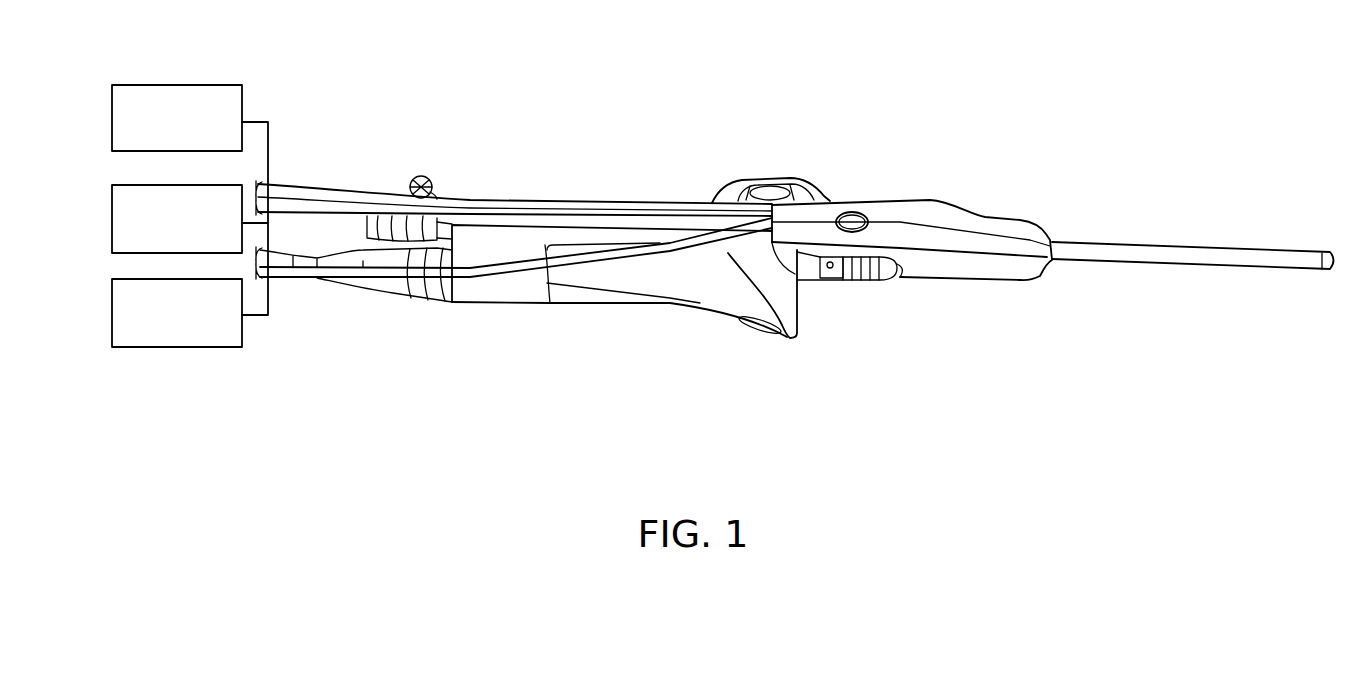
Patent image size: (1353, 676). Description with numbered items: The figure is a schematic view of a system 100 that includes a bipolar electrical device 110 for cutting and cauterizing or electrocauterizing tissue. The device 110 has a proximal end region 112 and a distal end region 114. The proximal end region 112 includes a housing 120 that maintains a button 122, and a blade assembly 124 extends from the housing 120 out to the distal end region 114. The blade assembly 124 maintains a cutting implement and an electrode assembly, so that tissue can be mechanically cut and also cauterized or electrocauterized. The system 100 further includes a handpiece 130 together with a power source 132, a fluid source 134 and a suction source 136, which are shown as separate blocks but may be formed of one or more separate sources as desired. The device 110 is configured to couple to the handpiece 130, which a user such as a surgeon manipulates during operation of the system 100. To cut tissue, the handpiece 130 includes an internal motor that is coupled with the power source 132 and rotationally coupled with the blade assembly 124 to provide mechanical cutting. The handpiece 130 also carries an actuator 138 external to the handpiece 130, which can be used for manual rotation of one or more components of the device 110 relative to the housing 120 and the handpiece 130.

The system 100 is at (765, 72).
The bipolar electrical device 110 is at (619, 178).
The proximal end region 112 is at (932, 296).
The distal end region 114 is at (1308, 280).
The housing 120 is at (930, 208).
The button 122 is at (850, 213).
The blade assembly 124 is at (1152, 248).
The handpiece 130 is at (593, 287).
The power source 132 is at (112, 192).
The fluid source 134 is at (219, 84).
The suction source 136 is at (177, 348).
The actuator 138 is at (774, 181).